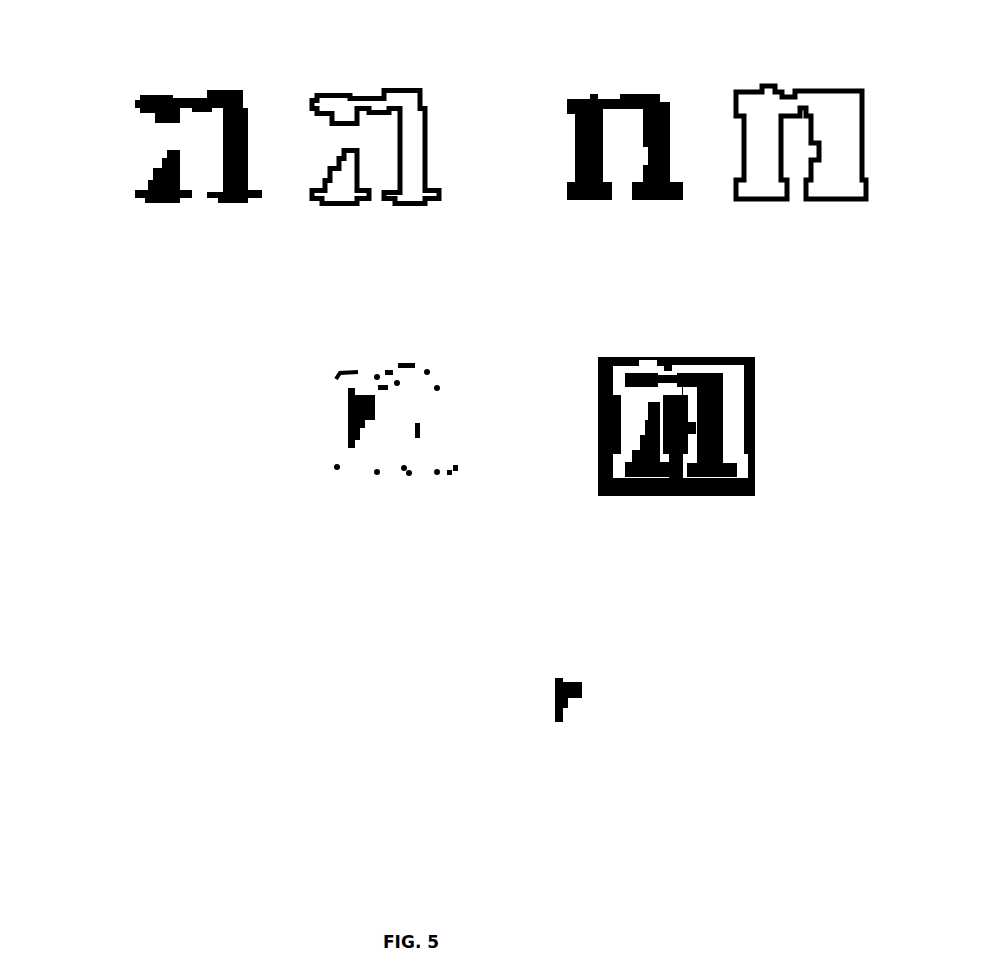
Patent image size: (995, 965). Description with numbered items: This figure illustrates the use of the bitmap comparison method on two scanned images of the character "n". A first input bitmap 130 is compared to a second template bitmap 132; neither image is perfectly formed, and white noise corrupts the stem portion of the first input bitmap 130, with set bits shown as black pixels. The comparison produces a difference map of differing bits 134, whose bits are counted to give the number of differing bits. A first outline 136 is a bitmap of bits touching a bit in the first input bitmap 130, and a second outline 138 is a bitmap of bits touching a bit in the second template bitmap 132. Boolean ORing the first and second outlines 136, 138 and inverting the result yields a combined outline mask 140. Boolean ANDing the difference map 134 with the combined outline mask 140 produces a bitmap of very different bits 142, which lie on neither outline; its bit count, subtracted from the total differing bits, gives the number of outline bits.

The first input bitmap 130 is at (127, 120).
The second template bitmap 132 is at (627, 94).
The difference map of differing bits 134 is at (342, 424).
The first outline 136 is at (356, 90).
The second outline 138 is at (836, 87).
The combined outline mask 140 is at (760, 430).
The bitmap of very different bits 142 is at (583, 698).